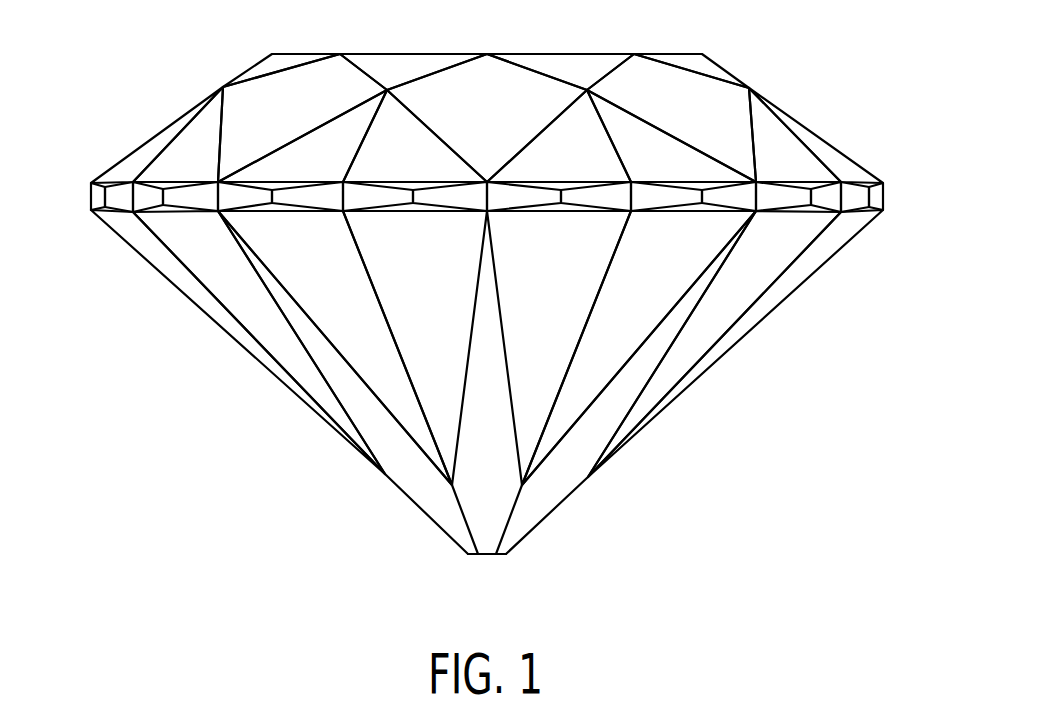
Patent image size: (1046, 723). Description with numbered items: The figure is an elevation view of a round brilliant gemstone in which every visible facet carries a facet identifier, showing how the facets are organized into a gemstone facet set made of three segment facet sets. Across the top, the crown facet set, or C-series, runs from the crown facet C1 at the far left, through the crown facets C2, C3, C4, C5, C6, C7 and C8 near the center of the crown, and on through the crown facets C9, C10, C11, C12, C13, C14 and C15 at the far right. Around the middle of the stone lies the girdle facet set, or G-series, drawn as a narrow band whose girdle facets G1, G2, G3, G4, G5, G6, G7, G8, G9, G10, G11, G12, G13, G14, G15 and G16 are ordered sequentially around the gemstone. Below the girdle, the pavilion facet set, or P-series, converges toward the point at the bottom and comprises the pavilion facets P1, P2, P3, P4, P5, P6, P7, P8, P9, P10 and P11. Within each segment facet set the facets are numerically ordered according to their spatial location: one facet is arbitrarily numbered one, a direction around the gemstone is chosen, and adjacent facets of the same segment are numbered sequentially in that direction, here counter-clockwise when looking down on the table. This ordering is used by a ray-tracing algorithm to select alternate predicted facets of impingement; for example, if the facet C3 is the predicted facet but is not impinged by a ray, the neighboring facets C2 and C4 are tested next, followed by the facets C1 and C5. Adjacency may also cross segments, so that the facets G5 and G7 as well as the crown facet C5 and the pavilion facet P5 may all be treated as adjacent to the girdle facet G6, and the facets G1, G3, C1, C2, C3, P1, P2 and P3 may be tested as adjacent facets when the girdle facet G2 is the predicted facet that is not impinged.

The crown facet C1 is at (117, 173).
The crown facet C2 is at (168, 153).
The crown facet C3 is at (253, 73).
The crown facet C4 is at (275, 100).
The crown facet C5 is at (333, 132).
The crown facet C6 is at (378, 143).
The crown facet C7 is at (385, 68).
The crown facet C8 is at (532, 82).
The crown facet C9 is at (585, 70).
The crown facet C10 is at (592, 145).
The crown facet C11 is at (637, 132).
The crown facet C12 is at (695, 103).
The crown facet C13 is at (720, 73).
The crown facet C14 is at (807, 160).
The crown facet C15 is at (857, 175).
The girdle facet G1 is at (95, 200).
The girdle facet G2 is at (113, 200).
The girdle facet G3 is at (147, 200).
The girdle facet G4 is at (210, 195).
The girdle facet G5 is at (265, 195).
The girdle facet G6 is at (333, 195).
The girdle facet G7 is at (400, 195).
The girdle facet G8 is at (462, 195).
The girdle facet G9 is at (510, 195).
The girdle facet G10 is at (585, 200).
The girdle facet G11 is at (643, 200).
The girdle facet G12 is at (707, 200).
The girdle facet G13 is at (767, 200).
The girdle facet G14 is at (830, 205).
The girdle facet G15 is at (865, 205).
The girdle facet G16 is at (880, 205).
The pavilion facet P1 is at (292, 382).
The pavilion facet P2 is at (333, 407).
The pavilion facet P3 is at (373, 440).
The pavilion facet P4 is at (417, 435).
The pavilion facet P5 is at (443, 437).
The pavilion facet P6 is at (488, 555).
The pavilion facet P7 is at (535, 445).
The pavilion facet P8 is at (548, 455).
The pavilion facet P9 is at (600, 440).
The pavilion facet P10 is at (640, 408).
The pavilion facet P11 is at (685, 383).